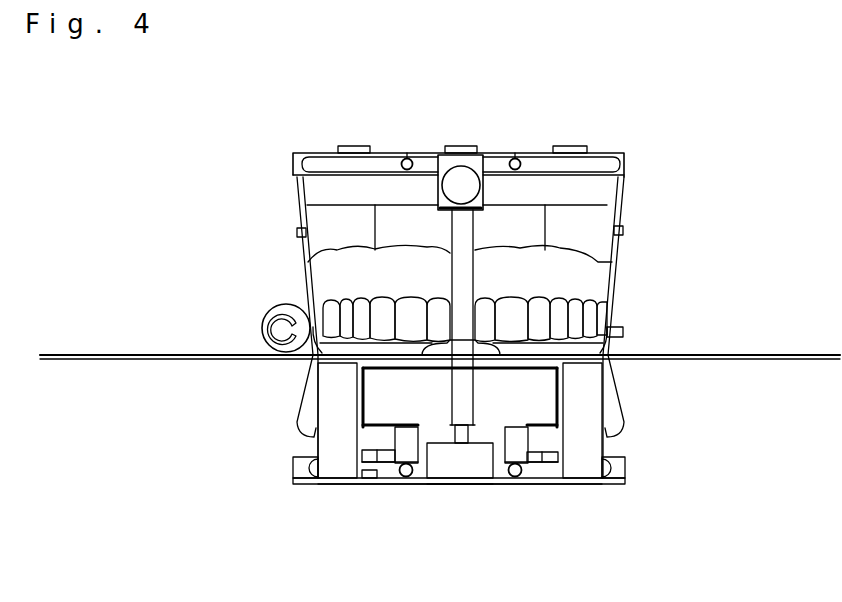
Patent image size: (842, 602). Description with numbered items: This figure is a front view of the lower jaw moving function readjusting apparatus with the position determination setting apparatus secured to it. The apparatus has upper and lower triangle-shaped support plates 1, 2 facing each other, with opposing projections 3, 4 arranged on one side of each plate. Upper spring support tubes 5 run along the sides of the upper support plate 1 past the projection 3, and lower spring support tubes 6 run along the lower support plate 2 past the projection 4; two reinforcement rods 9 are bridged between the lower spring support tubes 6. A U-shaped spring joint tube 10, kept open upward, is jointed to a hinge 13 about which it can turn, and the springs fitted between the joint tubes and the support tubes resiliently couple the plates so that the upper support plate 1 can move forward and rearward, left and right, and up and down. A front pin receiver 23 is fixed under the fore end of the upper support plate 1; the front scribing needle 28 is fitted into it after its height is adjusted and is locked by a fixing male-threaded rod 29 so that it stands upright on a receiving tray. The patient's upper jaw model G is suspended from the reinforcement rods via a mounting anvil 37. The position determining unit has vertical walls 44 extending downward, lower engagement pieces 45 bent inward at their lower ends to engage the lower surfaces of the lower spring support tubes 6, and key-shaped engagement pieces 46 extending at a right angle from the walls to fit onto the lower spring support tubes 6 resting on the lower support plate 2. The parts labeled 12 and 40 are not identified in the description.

The upper support plate 1 is at (601, 153).
The lower support plate 2 is at (510, 485).
The projection 3 is at (625, 163).
The projection 4 is at (628, 472).
The upper spring support tubes 5 is at (406, 158).
The lower spring support tubes 6 is at (398, 483).
The reinforcement rods 9 is at (498, 485).
The U-shaped spring joint tube 10 is at (462, 480).
The ring member 12 is at (262, 328).
The hinge 13 is at (614, 330).
The front pin receiver 23 is at (484, 162).
The front scribing needle 28 is at (473, 390).
The fixing male-threaded rod 29 is at (461, 183).
The mounting anvil 37 is at (600, 193).
The support post 40 is at (348, 383).
The vertical walls 44 is at (330, 444).
The lower engagement pieces 45 is at (363, 483).
The key-shaped engagement pieces 46 is at (403, 440).
The upper jaw model G is at (612, 250).